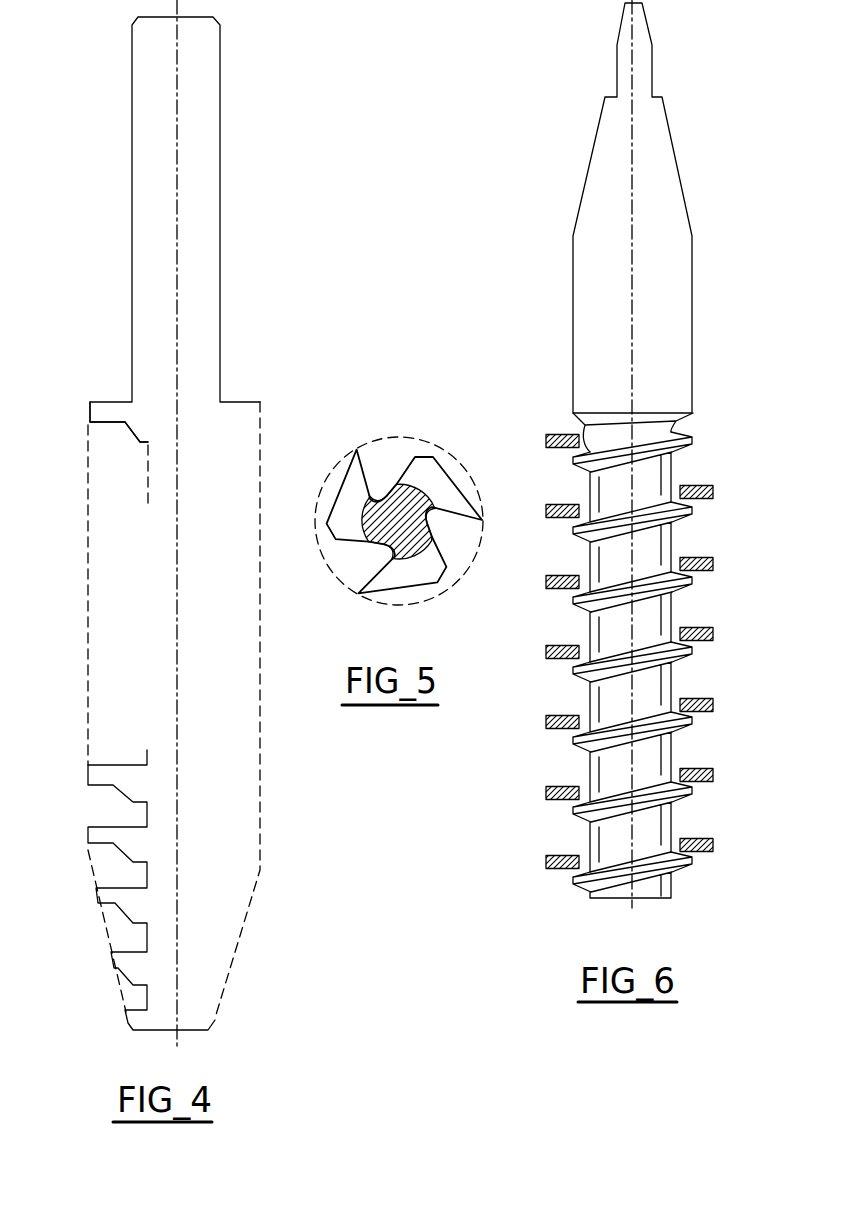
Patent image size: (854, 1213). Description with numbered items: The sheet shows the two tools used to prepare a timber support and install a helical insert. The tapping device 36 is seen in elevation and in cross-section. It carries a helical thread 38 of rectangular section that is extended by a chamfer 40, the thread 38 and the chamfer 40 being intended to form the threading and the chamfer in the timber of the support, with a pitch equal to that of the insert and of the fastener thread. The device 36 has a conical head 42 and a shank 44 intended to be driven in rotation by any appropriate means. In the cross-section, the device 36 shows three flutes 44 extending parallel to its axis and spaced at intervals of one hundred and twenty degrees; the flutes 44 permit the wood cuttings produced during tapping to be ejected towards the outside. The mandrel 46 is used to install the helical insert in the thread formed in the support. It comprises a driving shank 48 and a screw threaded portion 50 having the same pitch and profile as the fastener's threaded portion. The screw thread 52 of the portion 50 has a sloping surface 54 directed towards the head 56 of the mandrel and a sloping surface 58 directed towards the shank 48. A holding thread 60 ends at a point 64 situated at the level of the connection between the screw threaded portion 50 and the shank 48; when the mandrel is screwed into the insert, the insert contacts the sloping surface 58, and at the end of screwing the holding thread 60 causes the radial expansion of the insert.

In FIG. 4, the tapping device 36 is at (176, 523).
In FIG. 5, the tapping device 36 is at (406, 482).
In FIG. 4, the helical thread 38 is at (90, 412).
In FIG. 4, the chamfer 40 is at (130, 430).
In FIG. 4, the conical head 42 is at (232, 968).
In FIG. 4, the shank / flutes 44 is at (200, 155).
In FIG. 5, the shank / flutes 44 is at (392, 467).
In FIG. 6, the mandrel 46 is at (663, 473).
In FIG. 6, the driving shank 48 is at (658, 167).
In FIG. 6, the screw threaded portion 50 is at (657, 692).
In FIG. 6, the screw thread 52 is at (692, 577).
In FIG. 6, the sloping surface 54 is at (682, 593).
In FIG. 6, the head 56 is at (655, 895).
In FIG. 6, the sloping surface 58 is at (682, 558).
In FIG. 6, the holding thread 60 is at (653, 477).
In FIG. 6, the point 64 is at (668, 428).